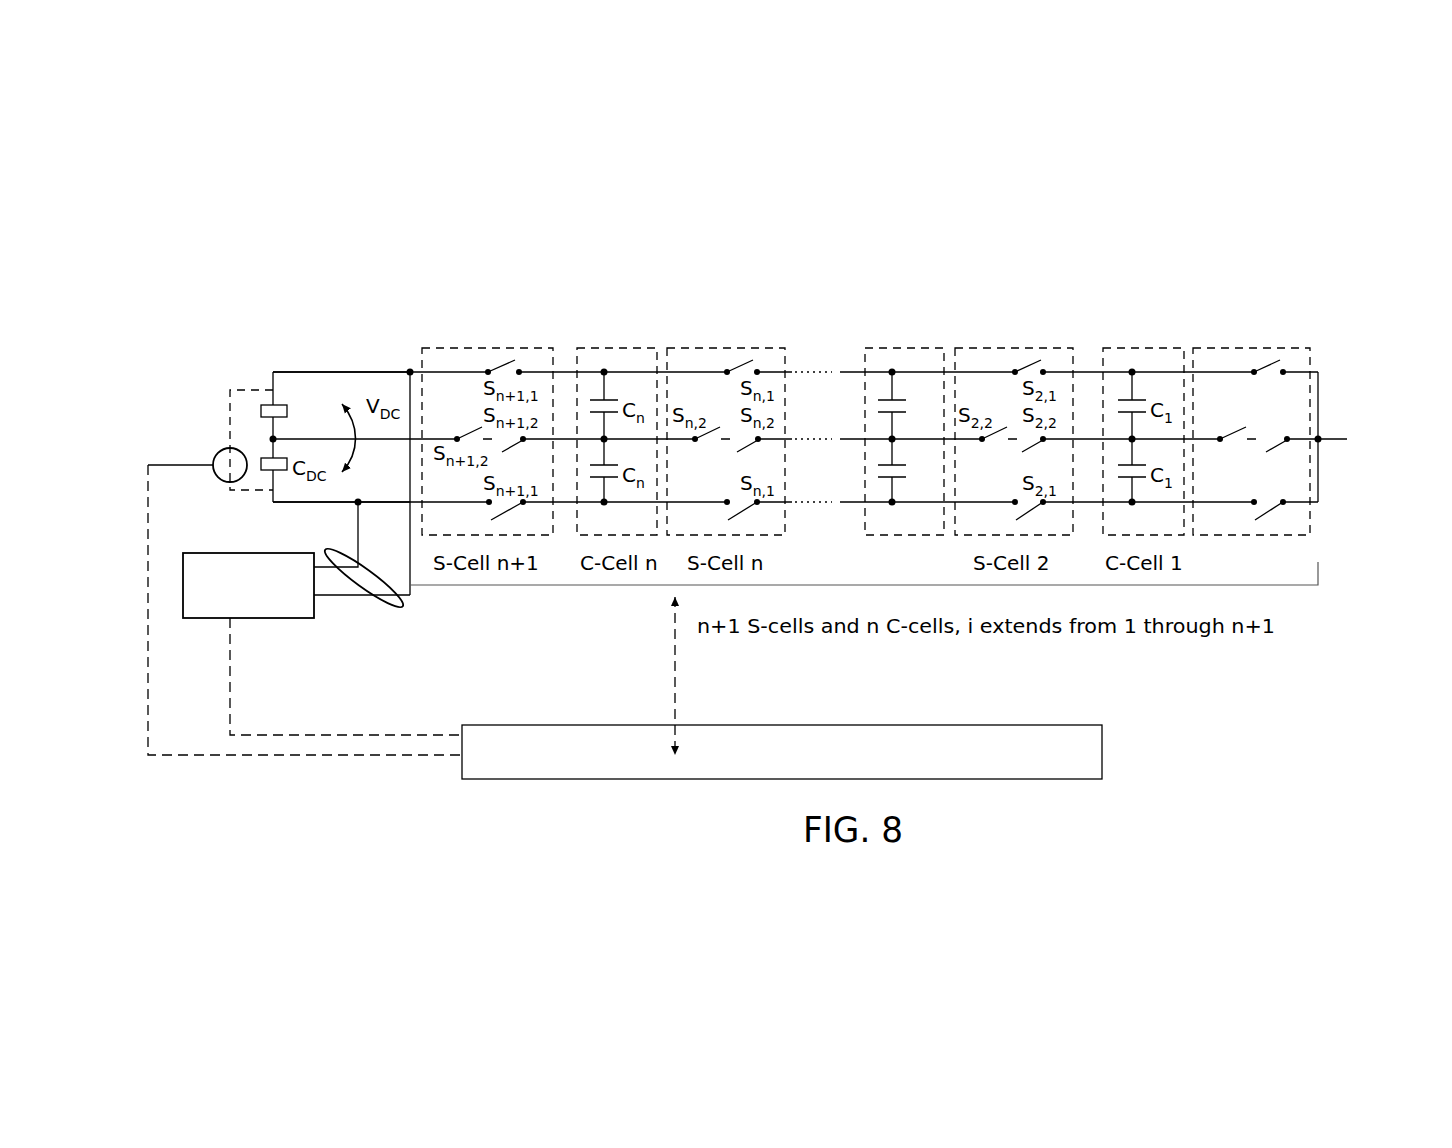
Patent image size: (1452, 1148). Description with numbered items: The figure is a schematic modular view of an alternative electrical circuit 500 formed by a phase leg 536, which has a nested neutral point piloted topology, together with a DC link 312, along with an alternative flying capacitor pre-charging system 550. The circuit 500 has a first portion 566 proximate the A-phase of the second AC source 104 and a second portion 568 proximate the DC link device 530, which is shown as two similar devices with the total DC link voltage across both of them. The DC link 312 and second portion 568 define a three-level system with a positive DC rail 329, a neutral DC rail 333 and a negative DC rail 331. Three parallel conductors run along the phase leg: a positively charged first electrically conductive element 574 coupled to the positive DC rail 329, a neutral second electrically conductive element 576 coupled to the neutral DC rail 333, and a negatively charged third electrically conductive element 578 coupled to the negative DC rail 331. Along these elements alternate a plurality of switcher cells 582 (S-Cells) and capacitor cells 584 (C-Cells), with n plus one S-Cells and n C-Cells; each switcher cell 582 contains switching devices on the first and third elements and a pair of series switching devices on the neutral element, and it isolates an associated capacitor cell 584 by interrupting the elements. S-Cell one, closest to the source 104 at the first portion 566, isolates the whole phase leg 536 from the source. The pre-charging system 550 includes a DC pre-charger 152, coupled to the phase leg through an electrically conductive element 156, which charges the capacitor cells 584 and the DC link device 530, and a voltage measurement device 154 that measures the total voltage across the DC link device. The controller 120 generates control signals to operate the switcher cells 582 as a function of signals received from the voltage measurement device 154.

The electrical circuit 500 is at (770, 268).
The phase leg 536 is at (845, 296).
The first portion 566 is at (1280, 334).
The second portion 568 is at (352, 303).
The first electrically conductive element 574 is at (846, 356).
The second electrically conductive element 576 is at (812, 430).
The third electrically conductive element 578 is at (812, 496).
The switcher cell 582 is at (504, 345).
The capacitor cell 584 is at (605, 345).
The second AC source 104 is at (1374, 400).
The DC link device 530 is at (243, 400).
The DC link 312 is at (285, 388).
The positive DC rail 329 is at (378, 370).
The neutral DC rail 333 is at (380, 441).
The negative DC rail 331 is at (340, 506).
The voltage measurement device 154 is at (215, 452).
The flying capacitor pre-charging system 550 is at (246, 521).
The DC pre-charger 152 is at (197, 620).
The electrically conductive element 156 is at (403, 613).
The controller 120 is at (770, 765).